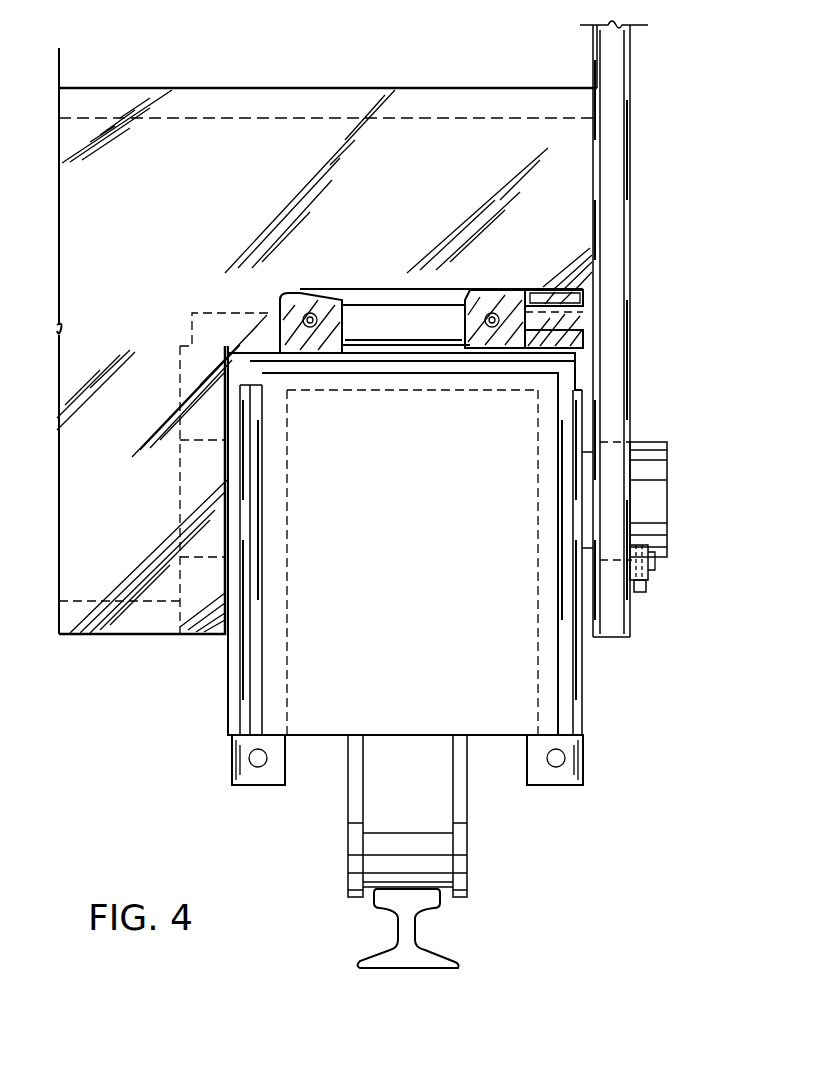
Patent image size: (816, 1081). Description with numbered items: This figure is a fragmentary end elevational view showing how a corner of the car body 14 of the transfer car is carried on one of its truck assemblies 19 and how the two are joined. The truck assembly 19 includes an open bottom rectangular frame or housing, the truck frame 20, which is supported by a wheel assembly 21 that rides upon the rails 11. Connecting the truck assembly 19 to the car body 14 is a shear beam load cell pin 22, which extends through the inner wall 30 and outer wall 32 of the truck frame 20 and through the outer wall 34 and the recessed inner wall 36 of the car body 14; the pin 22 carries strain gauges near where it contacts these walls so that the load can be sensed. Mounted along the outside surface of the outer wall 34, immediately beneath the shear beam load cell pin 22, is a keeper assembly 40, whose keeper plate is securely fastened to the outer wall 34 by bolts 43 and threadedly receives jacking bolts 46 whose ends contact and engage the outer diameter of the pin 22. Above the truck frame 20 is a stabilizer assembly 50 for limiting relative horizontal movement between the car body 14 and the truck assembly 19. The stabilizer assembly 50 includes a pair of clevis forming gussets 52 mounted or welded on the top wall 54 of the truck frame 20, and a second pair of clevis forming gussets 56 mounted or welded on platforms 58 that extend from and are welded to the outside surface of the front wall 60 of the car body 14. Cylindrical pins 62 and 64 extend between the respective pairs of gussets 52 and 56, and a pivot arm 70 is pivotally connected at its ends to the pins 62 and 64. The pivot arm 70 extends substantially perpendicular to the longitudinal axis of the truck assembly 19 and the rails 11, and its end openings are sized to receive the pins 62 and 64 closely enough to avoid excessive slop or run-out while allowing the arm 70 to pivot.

The rails 11 is at (420, 917).
The car body 14 is at (438, 84).
The truck assembly 19 is at (258, 790).
The truck frame 20 is at (388, 376).
The wheel assembly 21 is at (470, 820).
The shear beam load cell pin 22 is at (650, 442).
The inner wall of truck frame 30 is at (240, 702).
The outer wall of truck frame 32 is at (570, 692).
The outer wall of car body 34 is at (622, 358).
The recessed inner wall of car body 36 is at (180, 482).
The keeper assembly 40 is at (650, 583).
The bolts 43 is at (655, 565).
The jacking bolt 46 is at (638, 592).
The stabilizer assembly 50 is at (405, 285).
The clevis forming gussets 52 is at (283, 300).
The top wall of truck frame 54 is at (440, 366).
The second clevis forming gussets 56 is at (497, 302).
The platforms 58 is at (545, 300).
The front wall of car body 60 is at (230, 212).
The cylindrical pin 62 is at (314, 312).
The cylindrical pin 64 is at (492, 312).
The pivot arm 70 is at (380, 295).